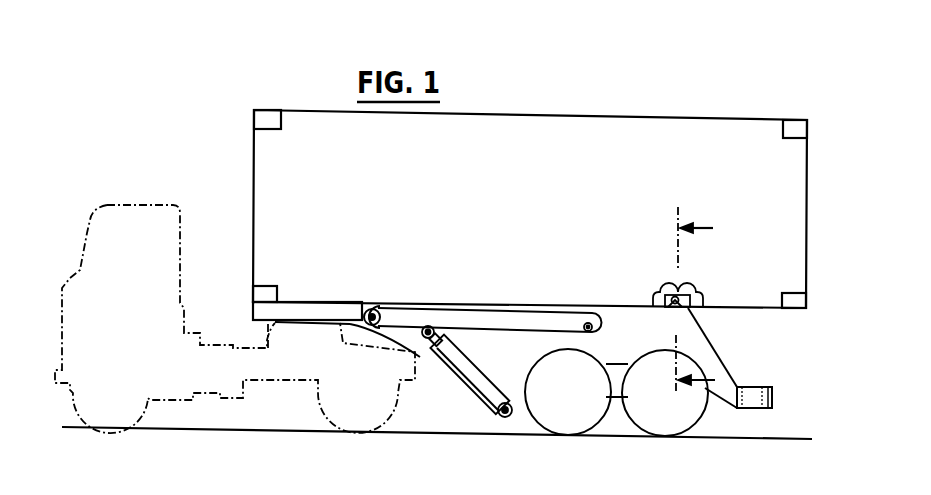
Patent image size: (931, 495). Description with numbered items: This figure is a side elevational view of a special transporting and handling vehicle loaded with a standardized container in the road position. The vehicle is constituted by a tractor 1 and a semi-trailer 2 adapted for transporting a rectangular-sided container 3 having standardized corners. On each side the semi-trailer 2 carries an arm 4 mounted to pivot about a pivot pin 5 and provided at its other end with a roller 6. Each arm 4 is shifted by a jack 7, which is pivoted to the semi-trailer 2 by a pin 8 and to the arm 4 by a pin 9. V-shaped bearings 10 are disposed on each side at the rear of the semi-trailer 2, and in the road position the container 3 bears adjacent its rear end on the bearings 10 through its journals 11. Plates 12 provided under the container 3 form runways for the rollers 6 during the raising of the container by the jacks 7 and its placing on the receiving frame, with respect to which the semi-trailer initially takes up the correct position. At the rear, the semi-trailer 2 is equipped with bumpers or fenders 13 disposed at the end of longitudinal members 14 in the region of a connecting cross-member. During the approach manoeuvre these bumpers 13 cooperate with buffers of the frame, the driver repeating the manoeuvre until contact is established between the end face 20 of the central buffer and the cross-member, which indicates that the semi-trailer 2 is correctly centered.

The tractor 1 is at (123, 228).
The semi-trailer 2 is at (425, 352).
The container 3 is at (793, 223).
The arm 4 is at (487, 321).
The pivot pin 5 is at (596, 334).
The roller 6 is at (358, 312).
The jack 7 is at (486, 386).
The pin 8 is at (507, 418).
The pin 9 is at (429, 325).
The V-shaped bearing 10 is at (672, 313).
The journal 11 is at (681, 291).
The plate 12 is at (680, 301).
The bumper 13 is at (772, 396).
The longitudinal member 14 is at (717, 402).
The end face of central buffer 20 is at (806, 307).